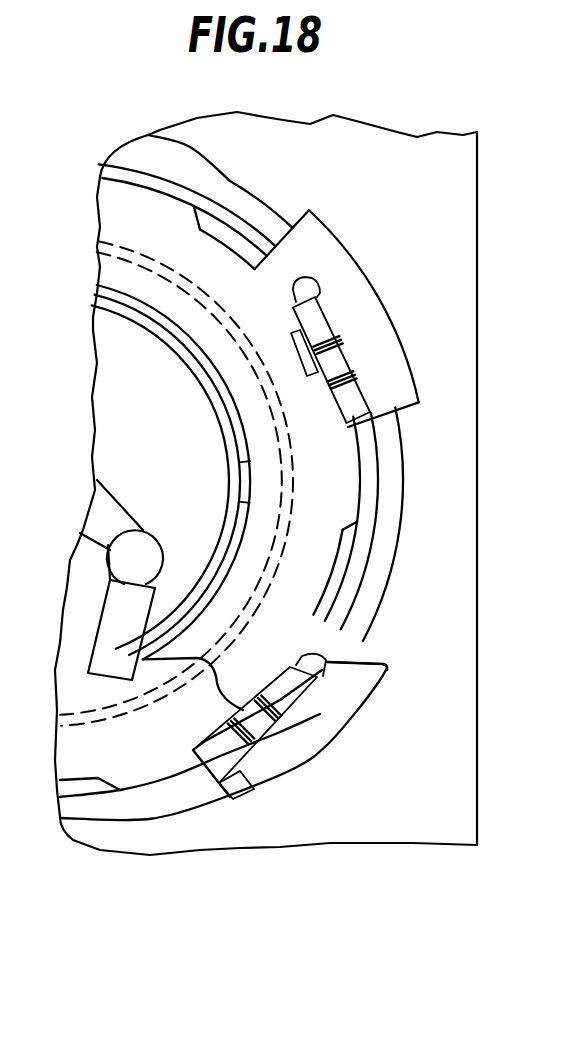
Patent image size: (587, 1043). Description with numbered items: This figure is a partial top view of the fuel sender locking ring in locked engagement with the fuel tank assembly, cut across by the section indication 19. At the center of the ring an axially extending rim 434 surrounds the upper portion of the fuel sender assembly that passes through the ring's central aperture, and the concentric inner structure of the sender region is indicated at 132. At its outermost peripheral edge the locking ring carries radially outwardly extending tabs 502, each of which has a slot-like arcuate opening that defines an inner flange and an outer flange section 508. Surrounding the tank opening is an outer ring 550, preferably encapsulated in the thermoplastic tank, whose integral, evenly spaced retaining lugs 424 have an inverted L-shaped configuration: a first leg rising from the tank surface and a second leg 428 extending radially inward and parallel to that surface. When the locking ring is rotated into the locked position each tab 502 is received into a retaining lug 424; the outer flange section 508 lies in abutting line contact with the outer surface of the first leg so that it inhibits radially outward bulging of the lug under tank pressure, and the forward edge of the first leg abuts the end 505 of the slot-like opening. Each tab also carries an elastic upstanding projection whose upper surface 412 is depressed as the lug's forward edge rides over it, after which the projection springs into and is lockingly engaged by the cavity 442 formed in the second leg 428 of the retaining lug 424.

The section line for FIG. 19 is at (190, 408).
The inner ring housing 132 is at (240, 513).
The upper surface 412 is at (142, 650).
The retaining lug 424 is at (207, 747).
The second leg 428 is at (257, 808).
The axially extending rim 434 is at (250, 478).
The cavity 442 is at (265, 707).
The tab 502 is at (377, 641).
The end of the opening 505 is at (389, 668).
The outer flange section 508 is at (306, 738).
The outer ring 550 is at (197, 826).